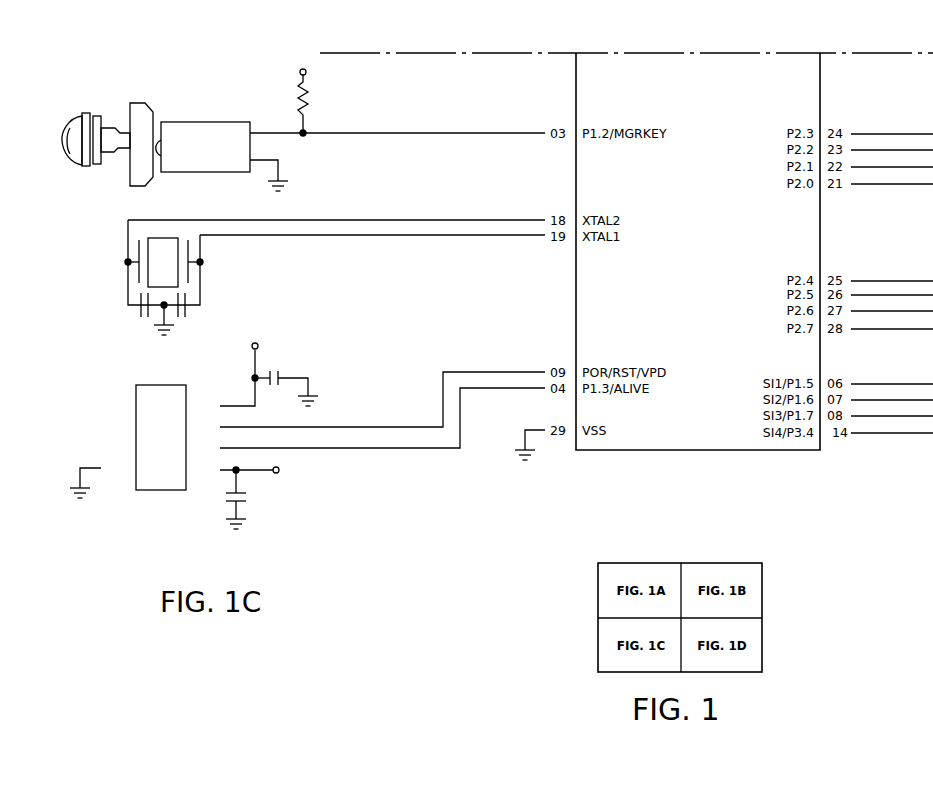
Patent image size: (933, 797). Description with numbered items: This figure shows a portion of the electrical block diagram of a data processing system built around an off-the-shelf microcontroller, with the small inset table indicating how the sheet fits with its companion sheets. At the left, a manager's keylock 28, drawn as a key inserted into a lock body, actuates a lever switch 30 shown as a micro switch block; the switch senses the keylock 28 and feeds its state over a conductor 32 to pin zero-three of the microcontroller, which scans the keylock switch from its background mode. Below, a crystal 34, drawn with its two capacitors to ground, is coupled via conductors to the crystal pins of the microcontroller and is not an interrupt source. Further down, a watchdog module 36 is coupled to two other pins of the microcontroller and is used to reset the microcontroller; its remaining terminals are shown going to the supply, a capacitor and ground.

The manager's keylock 28 is at (148, 110).
The lever switch 30 is at (209, 122).
The conductor 32 is at (395, 133).
The crystal 34 is at (104, 270).
The watchdog module 36 is at (165, 385).